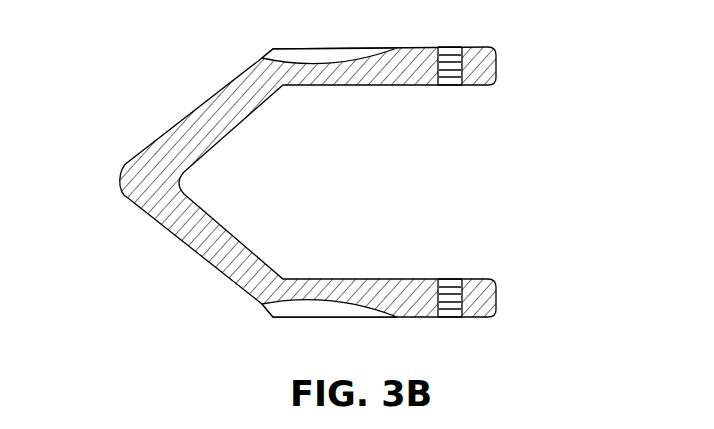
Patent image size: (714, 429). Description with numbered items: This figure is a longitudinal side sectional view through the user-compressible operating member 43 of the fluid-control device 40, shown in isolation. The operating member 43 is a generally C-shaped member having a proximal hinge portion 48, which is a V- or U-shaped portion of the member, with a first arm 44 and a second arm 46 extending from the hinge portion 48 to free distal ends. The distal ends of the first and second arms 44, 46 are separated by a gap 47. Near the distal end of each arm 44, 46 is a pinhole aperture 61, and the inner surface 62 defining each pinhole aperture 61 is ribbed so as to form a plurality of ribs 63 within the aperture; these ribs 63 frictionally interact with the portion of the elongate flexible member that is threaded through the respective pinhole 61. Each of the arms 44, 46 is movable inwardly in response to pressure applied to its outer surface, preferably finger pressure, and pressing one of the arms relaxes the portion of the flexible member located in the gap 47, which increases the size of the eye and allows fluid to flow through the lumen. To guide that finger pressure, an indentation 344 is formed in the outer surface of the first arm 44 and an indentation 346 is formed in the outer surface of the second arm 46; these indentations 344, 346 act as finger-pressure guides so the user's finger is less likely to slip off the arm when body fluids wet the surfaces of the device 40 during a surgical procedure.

The device 40 is at (171, 79).
The user-compressible operating member 43 is at (425, 44).
The first arm 44 is at (488, 76).
The second arm 46 is at (492, 282).
The gap 47 is at (492, 232).
The proximal hinge portion 48 is at (121, 181).
The pinhole aperture 61 is at (482, 47).
The inner surface 62 is at (455, 49).
The ribs 63 is at (455, 283).
The indentation 344 is at (328, 49).
The indentation 346 is at (322, 303).